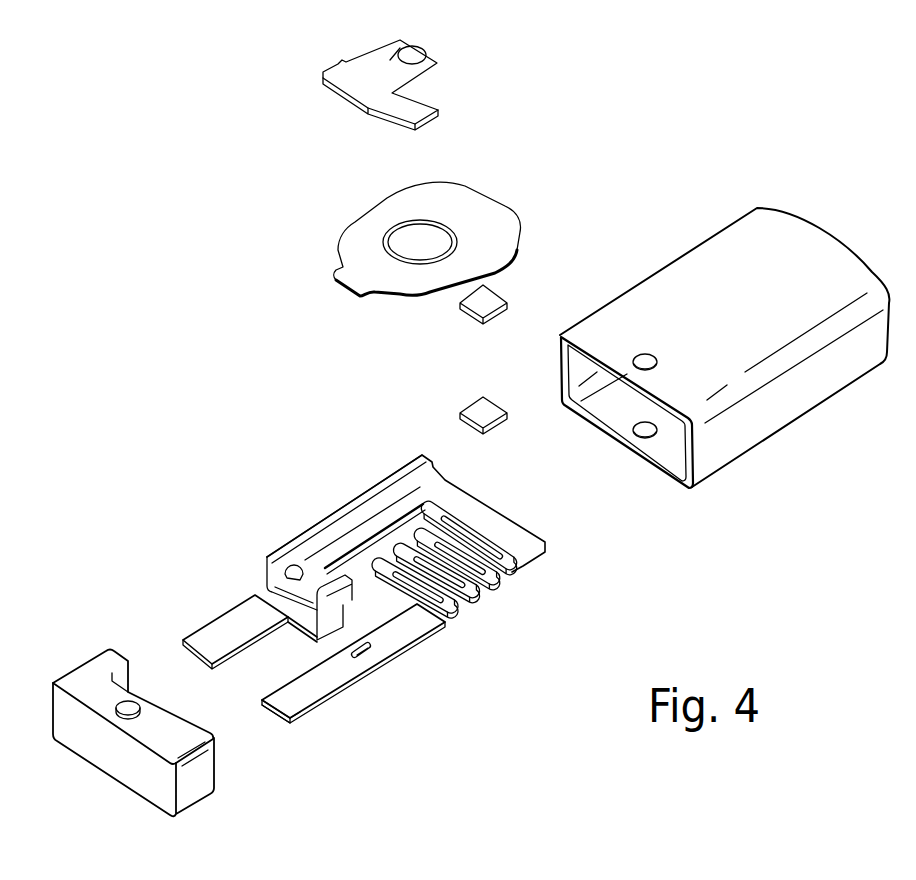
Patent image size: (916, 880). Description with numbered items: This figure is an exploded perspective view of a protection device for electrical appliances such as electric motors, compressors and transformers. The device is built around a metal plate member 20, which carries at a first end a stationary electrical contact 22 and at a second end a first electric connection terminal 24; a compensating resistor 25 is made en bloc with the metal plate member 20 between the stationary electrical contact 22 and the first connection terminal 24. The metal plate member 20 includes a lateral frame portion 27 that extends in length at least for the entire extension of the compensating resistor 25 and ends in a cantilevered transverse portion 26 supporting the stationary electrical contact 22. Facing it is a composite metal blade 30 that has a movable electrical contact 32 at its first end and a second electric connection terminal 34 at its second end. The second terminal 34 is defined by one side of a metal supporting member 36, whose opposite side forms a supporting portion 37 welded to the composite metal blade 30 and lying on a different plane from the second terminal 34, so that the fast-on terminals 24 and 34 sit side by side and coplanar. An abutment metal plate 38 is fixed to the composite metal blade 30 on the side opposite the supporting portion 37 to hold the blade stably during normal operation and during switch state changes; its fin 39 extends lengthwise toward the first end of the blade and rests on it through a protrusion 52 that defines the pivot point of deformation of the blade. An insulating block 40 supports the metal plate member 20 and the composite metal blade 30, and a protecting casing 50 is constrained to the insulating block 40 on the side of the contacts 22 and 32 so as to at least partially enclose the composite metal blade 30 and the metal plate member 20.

The metal plate member 20 is at (349, 691).
The stationary electrical contact 22 is at (503, 420).
The first electric connection terminal 24 is at (282, 713).
The compensating resistor 25 is at (522, 579).
The cantilevered transverse portion 26 is at (548, 545).
The lateral frame portion 27 is at (343, 507).
The composite metal blade 30 is at (478, 212).
The movable electrical contact 32 is at (487, 296).
The second electric connection terminal 34 is at (190, 630).
The metal supporting member 36 is at (210, 619).
The supporting portion 37 is at (345, 586).
The abutment metal plate 38 is at (358, 112).
The fin 39 is at (381, 67).
The insulating block 40 is at (105, 752).
The protecting casing 50 is at (817, 380).
The protrusion 52 is at (407, 55).